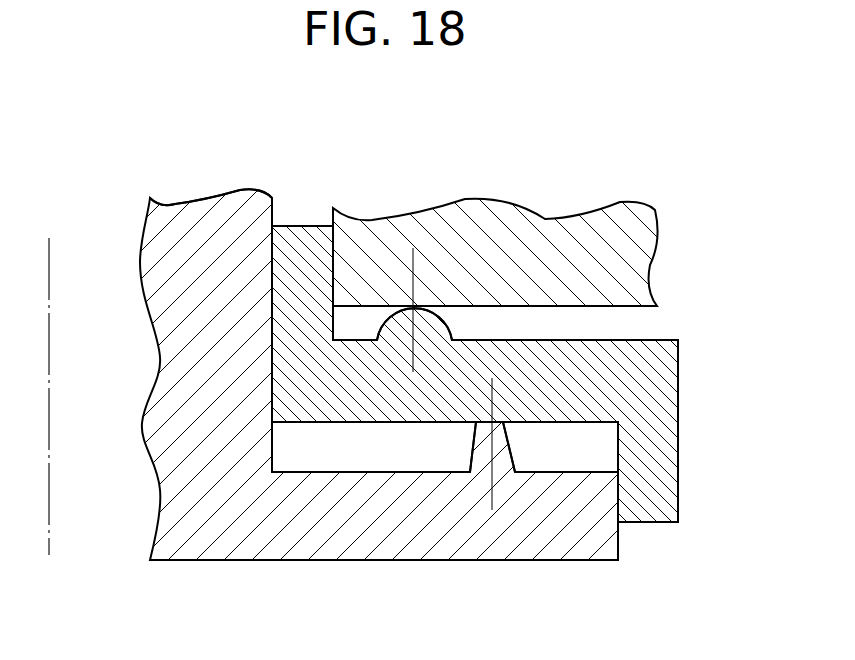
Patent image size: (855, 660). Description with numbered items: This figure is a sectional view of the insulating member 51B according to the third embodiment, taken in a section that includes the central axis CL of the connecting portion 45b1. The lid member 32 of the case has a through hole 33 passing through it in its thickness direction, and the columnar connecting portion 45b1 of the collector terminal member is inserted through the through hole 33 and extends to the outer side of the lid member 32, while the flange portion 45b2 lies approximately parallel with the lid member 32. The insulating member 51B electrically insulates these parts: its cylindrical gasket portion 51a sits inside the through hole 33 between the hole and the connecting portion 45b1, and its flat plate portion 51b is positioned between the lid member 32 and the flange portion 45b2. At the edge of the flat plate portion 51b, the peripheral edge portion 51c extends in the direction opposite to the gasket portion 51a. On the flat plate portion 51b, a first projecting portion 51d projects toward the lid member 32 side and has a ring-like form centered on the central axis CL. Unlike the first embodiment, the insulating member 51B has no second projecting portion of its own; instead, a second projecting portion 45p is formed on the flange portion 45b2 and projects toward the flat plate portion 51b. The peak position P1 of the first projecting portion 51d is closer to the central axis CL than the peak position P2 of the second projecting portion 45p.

The central axis CL is at (49, 266).
The lid member 32 is at (620, 250).
The through hole 33 is at (333, 268).
The connecting portion 45b1 is at (203, 325).
The flange portion 45b2 is at (592, 533).
The second projecting portion 45p is at (484, 456).
The insulating member 51B is at (422, 336).
The gasket portion 51a is at (303, 287).
The flat plate portion 51b is at (553, 382).
The peripheral edge portion 51c is at (655, 470).
The first projecting portion 51d is at (399, 327).
The peak position of the first projecting portion P1 is at (413, 278).
The peak position of the second projecting portion P2 is at (493, 510).